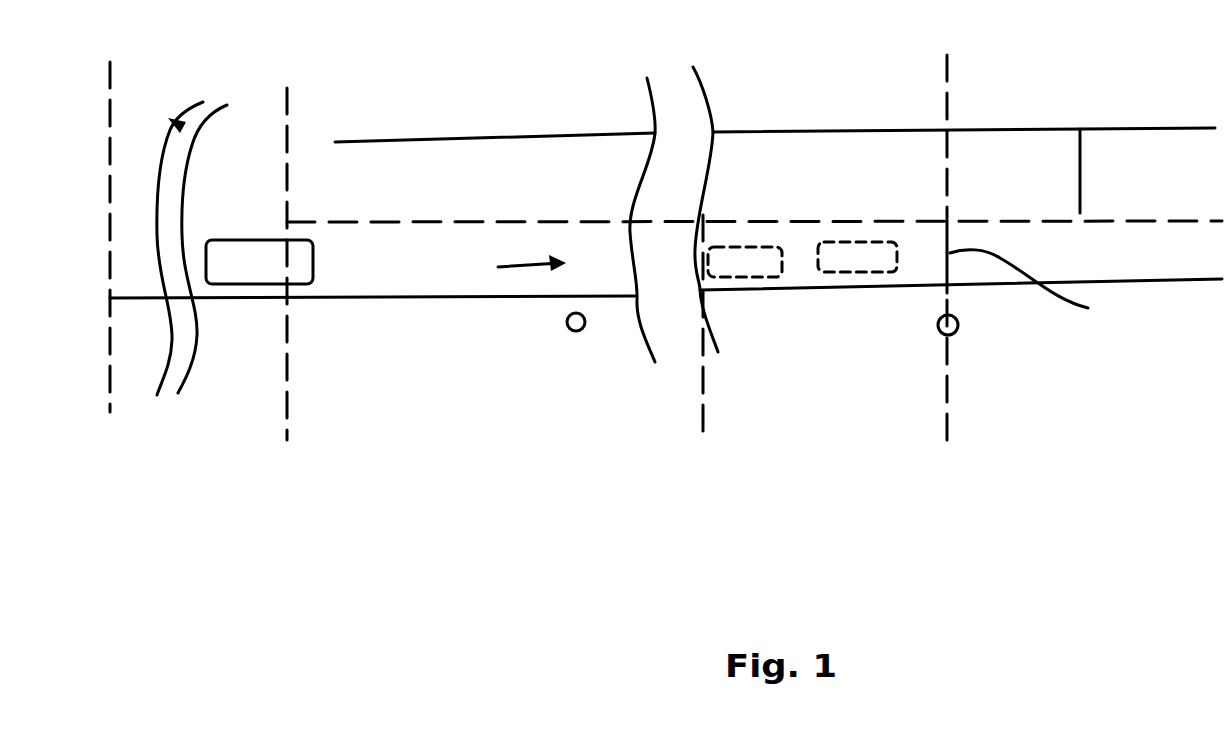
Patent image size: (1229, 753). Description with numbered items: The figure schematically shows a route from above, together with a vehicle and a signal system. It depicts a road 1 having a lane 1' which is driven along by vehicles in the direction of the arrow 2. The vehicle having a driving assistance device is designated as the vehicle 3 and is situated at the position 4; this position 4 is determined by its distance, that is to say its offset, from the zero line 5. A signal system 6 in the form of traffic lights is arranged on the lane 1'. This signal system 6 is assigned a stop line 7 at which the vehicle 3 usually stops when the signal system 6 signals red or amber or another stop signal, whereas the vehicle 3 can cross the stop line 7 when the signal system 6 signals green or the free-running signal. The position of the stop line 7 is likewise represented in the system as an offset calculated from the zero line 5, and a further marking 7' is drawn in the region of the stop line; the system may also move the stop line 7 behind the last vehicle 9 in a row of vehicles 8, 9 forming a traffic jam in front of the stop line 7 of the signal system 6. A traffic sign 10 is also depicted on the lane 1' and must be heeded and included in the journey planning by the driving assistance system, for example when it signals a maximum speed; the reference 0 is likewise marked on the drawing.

The reference point 0 is at (1080, 136).
The road 1 is at (775, 83).
The lane 1' is at (666, 335).
The arrow 2 is at (525, 282).
The vehicle 3 is at (251, 273).
The position 4 is at (284, 410).
The zero line 5 is at (110, 400).
The signal system 6 is at (958, 322).
The stop line 7 is at (1040, 290).
The position 7' is at (748, 339).
The vehicle in a row of vehicles 8 is at (862, 272).
The last vehicle 9 is at (768, 272).
The traffic sign 10 is at (584, 328).